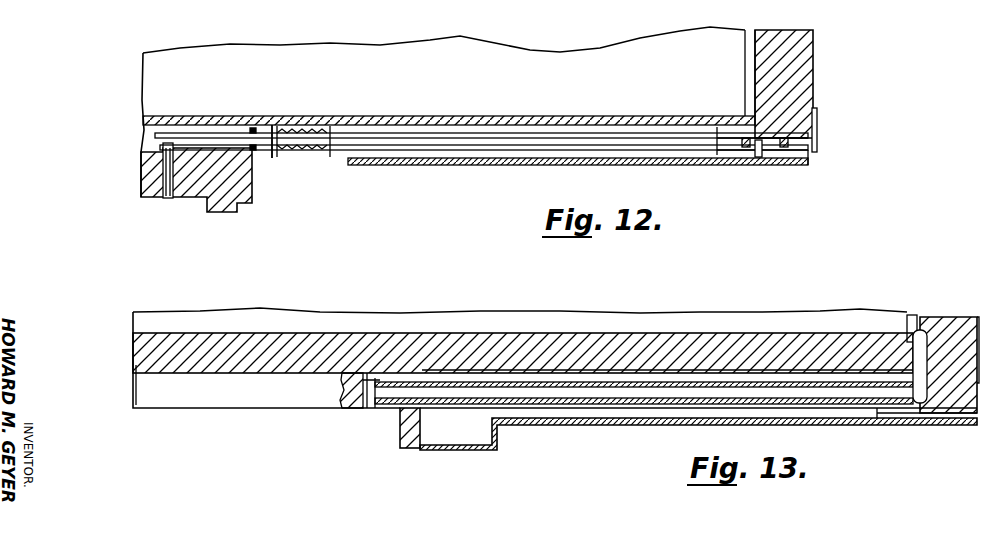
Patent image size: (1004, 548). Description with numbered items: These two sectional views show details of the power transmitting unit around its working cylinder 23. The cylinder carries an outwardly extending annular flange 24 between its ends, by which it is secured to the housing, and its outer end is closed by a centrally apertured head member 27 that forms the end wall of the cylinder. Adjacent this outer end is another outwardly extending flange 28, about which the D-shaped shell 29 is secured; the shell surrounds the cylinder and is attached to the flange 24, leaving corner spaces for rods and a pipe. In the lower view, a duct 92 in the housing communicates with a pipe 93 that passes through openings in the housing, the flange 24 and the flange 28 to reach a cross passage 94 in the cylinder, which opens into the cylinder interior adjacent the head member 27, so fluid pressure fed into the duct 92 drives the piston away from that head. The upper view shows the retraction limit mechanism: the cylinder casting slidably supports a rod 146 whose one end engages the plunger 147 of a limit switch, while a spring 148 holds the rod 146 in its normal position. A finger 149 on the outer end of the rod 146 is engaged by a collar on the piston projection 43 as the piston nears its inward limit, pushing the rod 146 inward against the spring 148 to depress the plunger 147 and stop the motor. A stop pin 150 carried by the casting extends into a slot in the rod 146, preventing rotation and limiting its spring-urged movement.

In FIG. 13, the working cylinder 23 is at (452, 352).
In FIG. 12, the annular flange 24 is at (262, 130).
In FIG. 13, the annular flange 24 is at (412, 430).
In FIG. 13, the head member 27 is at (950, 338).
In FIG. 13, the flange 28 is at (900, 410).
In FIG. 13, the shell 29 is at (630, 425).
In FIG. 12, the piston projection 43 is at (518, 120).
In FIG. 13, the duct 92 is at (370, 408).
In FIG. 13, the pipe 93 is at (512, 398).
In FIG. 13, the cross passage 94 is at (918, 355).
In FIG. 12, the rod 146 is at (556, 142).
In FIG. 12, the plunger 147 is at (165, 170).
In FIG. 12, the spring 148 is at (316, 148).
In FIG. 12, the finger 149 is at (818, 118).
In FIG. 12, the stop pin 150 is at (758, 158).